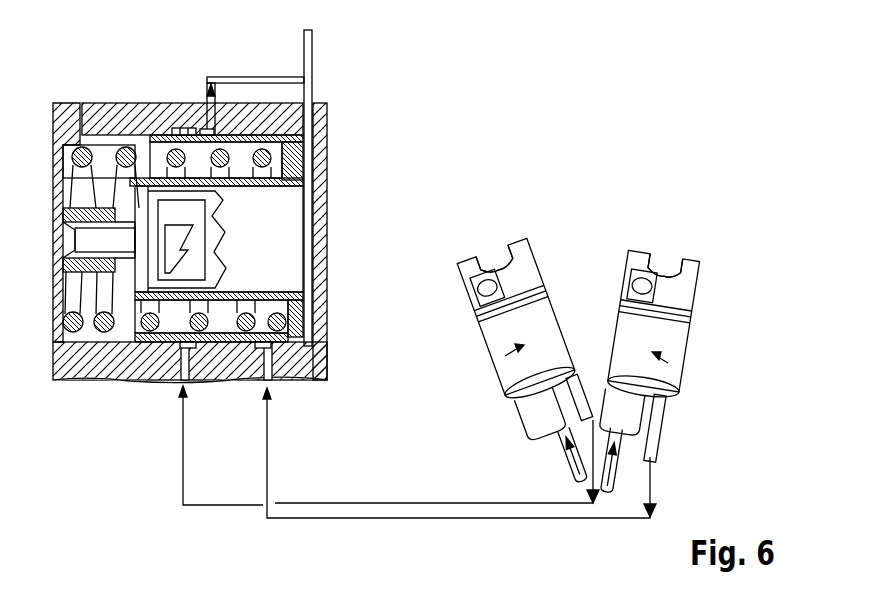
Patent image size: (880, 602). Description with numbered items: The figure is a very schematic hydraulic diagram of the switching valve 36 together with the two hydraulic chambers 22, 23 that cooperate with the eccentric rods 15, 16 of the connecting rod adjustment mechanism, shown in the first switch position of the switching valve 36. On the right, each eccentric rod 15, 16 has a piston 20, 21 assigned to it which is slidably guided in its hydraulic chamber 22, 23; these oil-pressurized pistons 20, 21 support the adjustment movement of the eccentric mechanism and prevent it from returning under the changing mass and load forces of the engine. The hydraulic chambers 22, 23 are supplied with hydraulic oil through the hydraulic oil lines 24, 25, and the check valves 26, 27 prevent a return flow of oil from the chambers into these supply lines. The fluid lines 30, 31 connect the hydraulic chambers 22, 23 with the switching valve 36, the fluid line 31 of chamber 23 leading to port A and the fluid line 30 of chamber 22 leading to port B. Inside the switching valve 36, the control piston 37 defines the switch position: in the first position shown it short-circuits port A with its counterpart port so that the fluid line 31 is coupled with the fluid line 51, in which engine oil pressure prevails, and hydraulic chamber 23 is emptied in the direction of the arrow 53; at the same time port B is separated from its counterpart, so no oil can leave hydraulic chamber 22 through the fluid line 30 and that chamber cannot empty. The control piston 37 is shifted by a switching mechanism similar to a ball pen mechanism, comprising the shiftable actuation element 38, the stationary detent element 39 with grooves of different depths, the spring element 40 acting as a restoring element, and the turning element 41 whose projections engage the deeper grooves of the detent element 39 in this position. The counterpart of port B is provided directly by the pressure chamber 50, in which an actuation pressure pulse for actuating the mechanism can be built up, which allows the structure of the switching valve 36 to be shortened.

The switching valve 36 is at (98, 72).
The control piston 37 is at (298, 162).
The actuation element 38 is at (302, 220).
The detent element 39 is at (207, 240).
The spring element 40 is at (74, 156).
The turning element 41 is at (146, 242).
The pressure chamber 50 is at (312, 358).
The fluid line 51 is at (250, 76).
The arrow 53 is at (196, 114).
The eccentric rod 15 is at (489, 258).
The eccentric rod 16 is at (661, 256).
The piston 20 is at (688, 305).
The piston 21 is at (528, 280).
The hydraulic chamber 22 is at (665, 362).
The hydraulic chamber 23 is at (508, 356).
The hydraulic oil line 24 is at (614, 460).
The hydraulic oil line 25 is at (556, 458).
The check valve 26 is at (630, 410).
The check valve 27 is at (535, 403).
The fluid line 30 is at (657, 435).
The fluid line 31 is at (598, 358).
The port A is at (183, 114).
The port B is at (267, 117).